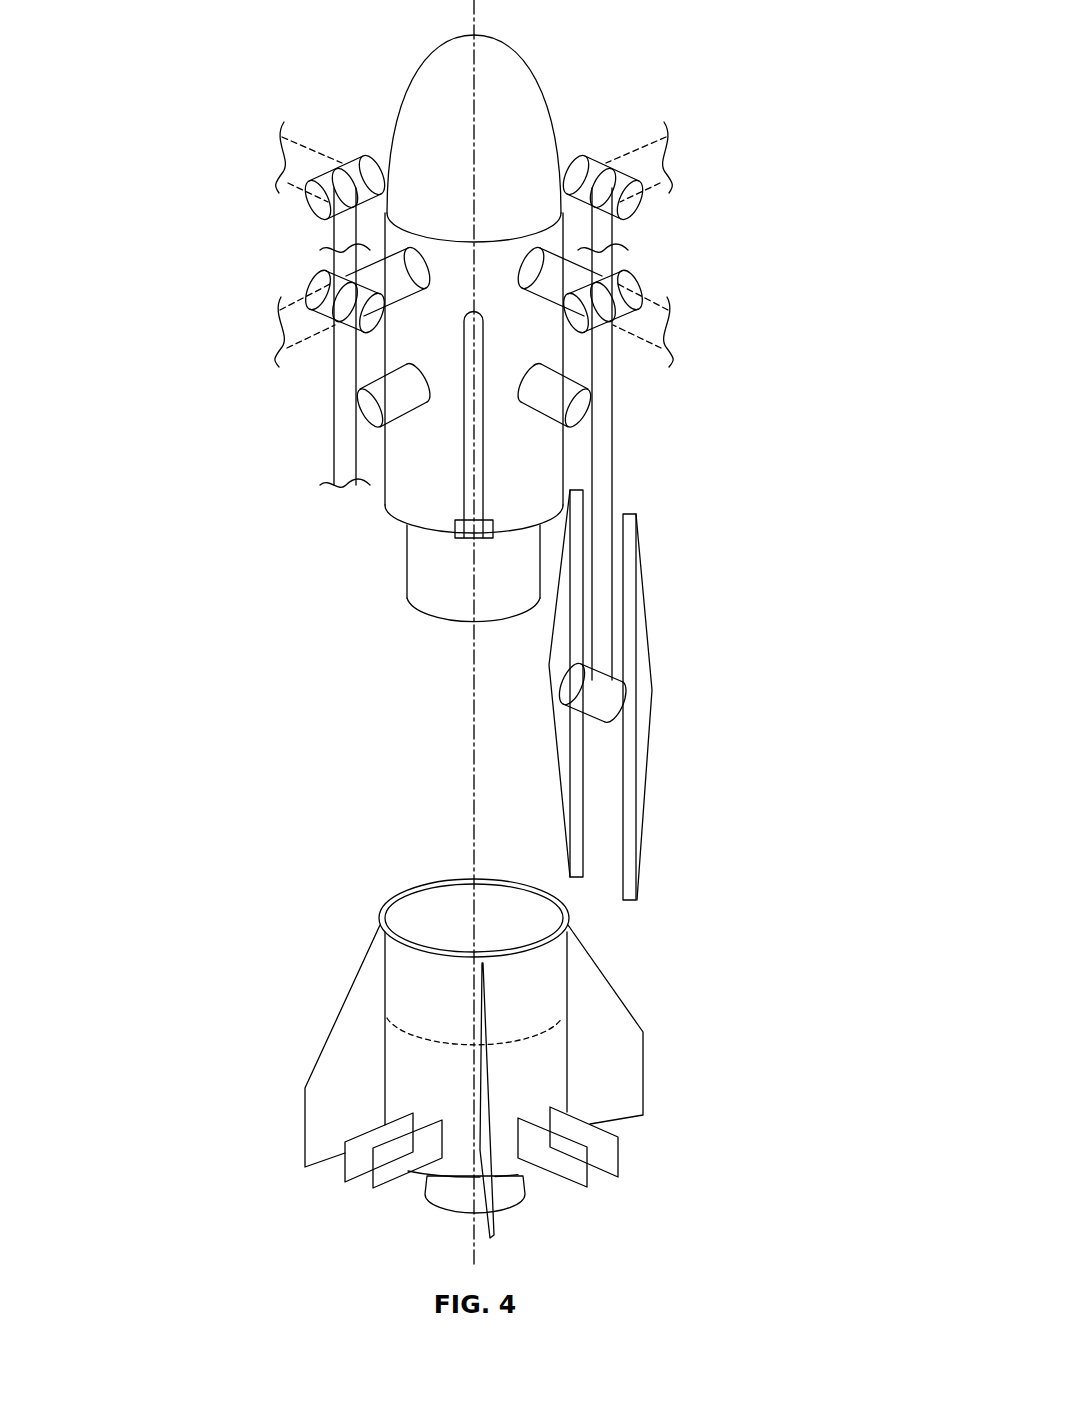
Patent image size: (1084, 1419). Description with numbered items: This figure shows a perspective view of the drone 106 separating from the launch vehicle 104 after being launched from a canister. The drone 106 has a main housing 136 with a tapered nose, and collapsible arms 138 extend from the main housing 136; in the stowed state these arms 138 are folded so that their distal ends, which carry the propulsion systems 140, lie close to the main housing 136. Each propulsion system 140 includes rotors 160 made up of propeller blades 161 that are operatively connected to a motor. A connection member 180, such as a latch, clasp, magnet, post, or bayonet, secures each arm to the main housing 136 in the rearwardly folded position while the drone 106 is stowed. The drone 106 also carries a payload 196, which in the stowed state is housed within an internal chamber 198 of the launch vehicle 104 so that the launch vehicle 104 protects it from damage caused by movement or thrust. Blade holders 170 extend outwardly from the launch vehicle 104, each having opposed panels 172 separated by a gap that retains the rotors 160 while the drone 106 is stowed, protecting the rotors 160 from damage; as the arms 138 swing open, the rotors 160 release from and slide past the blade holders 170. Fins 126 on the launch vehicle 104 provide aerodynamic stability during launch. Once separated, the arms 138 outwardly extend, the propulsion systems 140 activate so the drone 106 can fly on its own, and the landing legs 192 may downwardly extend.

The launch vehicle 104 is at (614, 969).
The drone 106 is at (436, 42).
The fins 126 is at (318, 1090).
The main housing 136 is at (512, 93).
The collapsible arms 138 is at (612, 483).
The propulsion systems 140 is at (651, 661).
The rotors 160 is at (557, 602).
The propeller blades 161 is at (634, 581).
The blade holders 170 is at (369, 1152).
The opposed panels 172 is at (345, 1168).
The connection member 180 is at (566, 392).
The landing legs 192 is at (464, 421).
The payload 196 is at (405, 576).
The internal chamber 198 is at (425, 915).